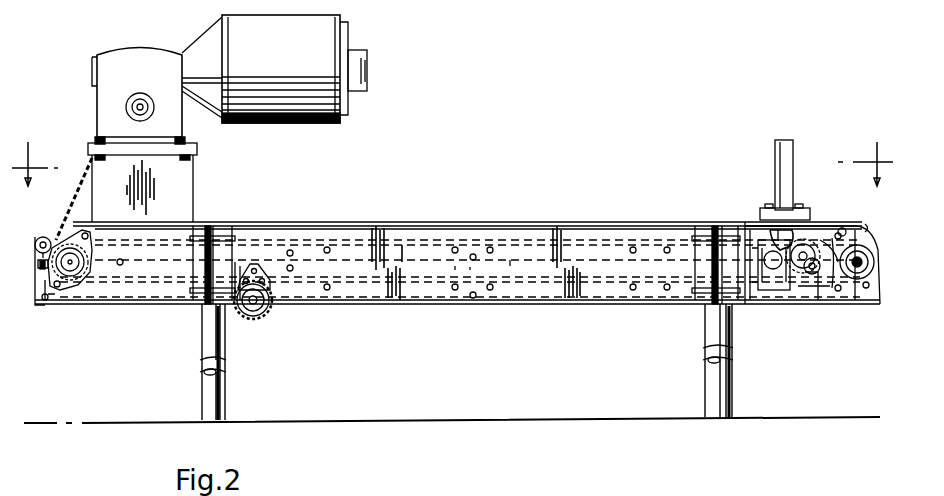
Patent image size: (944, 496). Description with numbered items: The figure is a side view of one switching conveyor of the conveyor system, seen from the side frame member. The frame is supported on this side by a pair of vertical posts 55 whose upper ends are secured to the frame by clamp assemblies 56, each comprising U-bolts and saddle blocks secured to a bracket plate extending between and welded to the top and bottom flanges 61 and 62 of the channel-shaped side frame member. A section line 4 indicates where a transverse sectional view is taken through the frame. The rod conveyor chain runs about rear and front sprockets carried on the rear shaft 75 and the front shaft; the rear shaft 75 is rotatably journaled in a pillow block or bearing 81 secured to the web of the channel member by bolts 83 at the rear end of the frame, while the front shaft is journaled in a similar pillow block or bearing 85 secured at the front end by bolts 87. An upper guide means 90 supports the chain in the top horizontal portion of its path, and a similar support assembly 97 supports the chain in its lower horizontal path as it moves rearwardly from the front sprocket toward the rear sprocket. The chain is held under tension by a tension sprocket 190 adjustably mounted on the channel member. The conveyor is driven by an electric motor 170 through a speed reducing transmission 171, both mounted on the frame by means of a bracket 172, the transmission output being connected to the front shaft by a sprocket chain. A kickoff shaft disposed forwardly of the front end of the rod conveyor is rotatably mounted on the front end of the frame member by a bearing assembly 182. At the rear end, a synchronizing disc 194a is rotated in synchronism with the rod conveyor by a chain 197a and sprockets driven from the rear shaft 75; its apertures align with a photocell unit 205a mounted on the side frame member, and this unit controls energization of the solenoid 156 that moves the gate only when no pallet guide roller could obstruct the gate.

The section line 4- 4 is at (452, 153).
The vertical posts 55 is at (226, 402).
The clamp assemblies 56 is at (732, 222).
The top flange 61 is at (612, 220).
The bottom flange 62 is at (602, 304).
The rear shaft 75 is at (854, 284).
The pillow block 81 is at (862, 237).
The bolts 83 is at (852, 222).
The pillow block 85 is at (80, 276).
The bolts 87 is at (66, 282).
The upper guide means 90 is at (410, 230).
The support assembly 97 is at (409, 308).
The solenoid 156 is at (778, 280).
The electric motor 170 is at (276, 118).
The speed reducing transmission 171 is at (119, 54).
The bracket 172 is at (198, 184).
The bearing assembly 182 is at (44, 236).
The tension sprocket 190 is at (264, 318).
The synchronizing disc 194a is at (812, 290).
The chain 197a is at (816, 222).
The photocell unit 205a is at (774, 210).